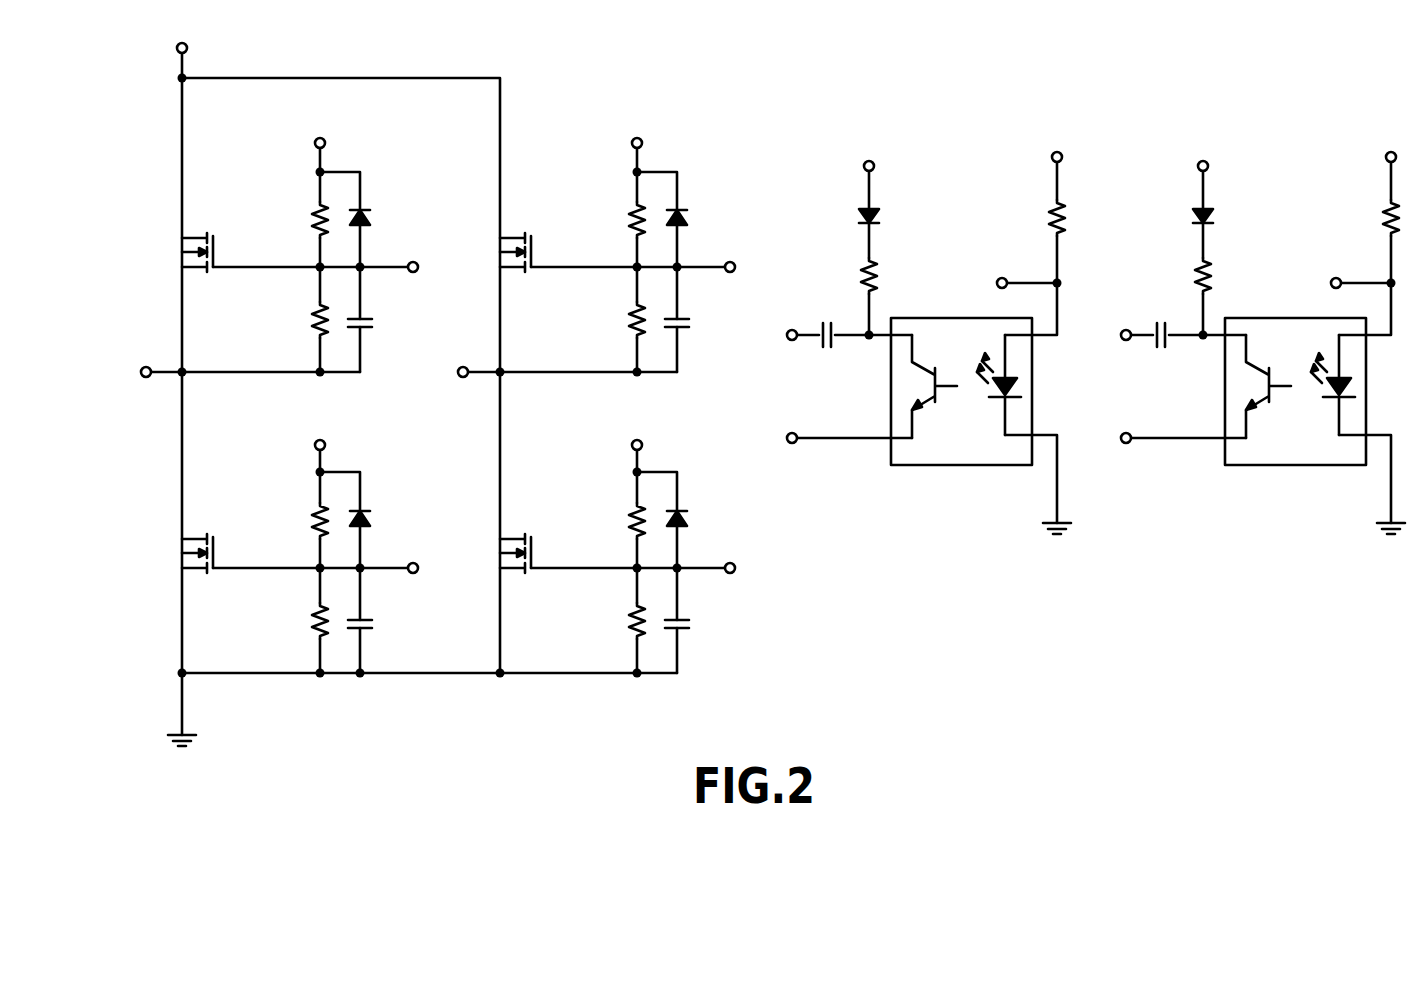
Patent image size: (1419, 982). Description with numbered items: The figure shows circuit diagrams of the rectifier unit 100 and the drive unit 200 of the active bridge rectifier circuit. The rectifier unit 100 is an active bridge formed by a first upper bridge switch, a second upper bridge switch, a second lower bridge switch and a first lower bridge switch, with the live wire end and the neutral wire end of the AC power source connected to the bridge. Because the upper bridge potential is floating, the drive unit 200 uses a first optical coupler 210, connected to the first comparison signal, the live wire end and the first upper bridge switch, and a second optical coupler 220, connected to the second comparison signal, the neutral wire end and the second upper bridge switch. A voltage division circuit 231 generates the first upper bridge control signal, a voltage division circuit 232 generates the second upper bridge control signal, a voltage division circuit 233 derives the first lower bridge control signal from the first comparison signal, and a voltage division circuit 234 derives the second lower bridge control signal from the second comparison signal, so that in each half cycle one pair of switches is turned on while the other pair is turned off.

The rectifier unit 100 is at (521, 131).
The drive unit 200 is at (1005, 548).
The first optical coupler 210 is at (965, 455).
The second optical coupler 220 is at (1297, 452).
The voltage division circuit 231 is at (316, 191).
The voltage division circuit 232 is at (633, 191).
The voltage division circuit 233 is at (633, 492).
The voltage division circuit 234 is at (316, 492).